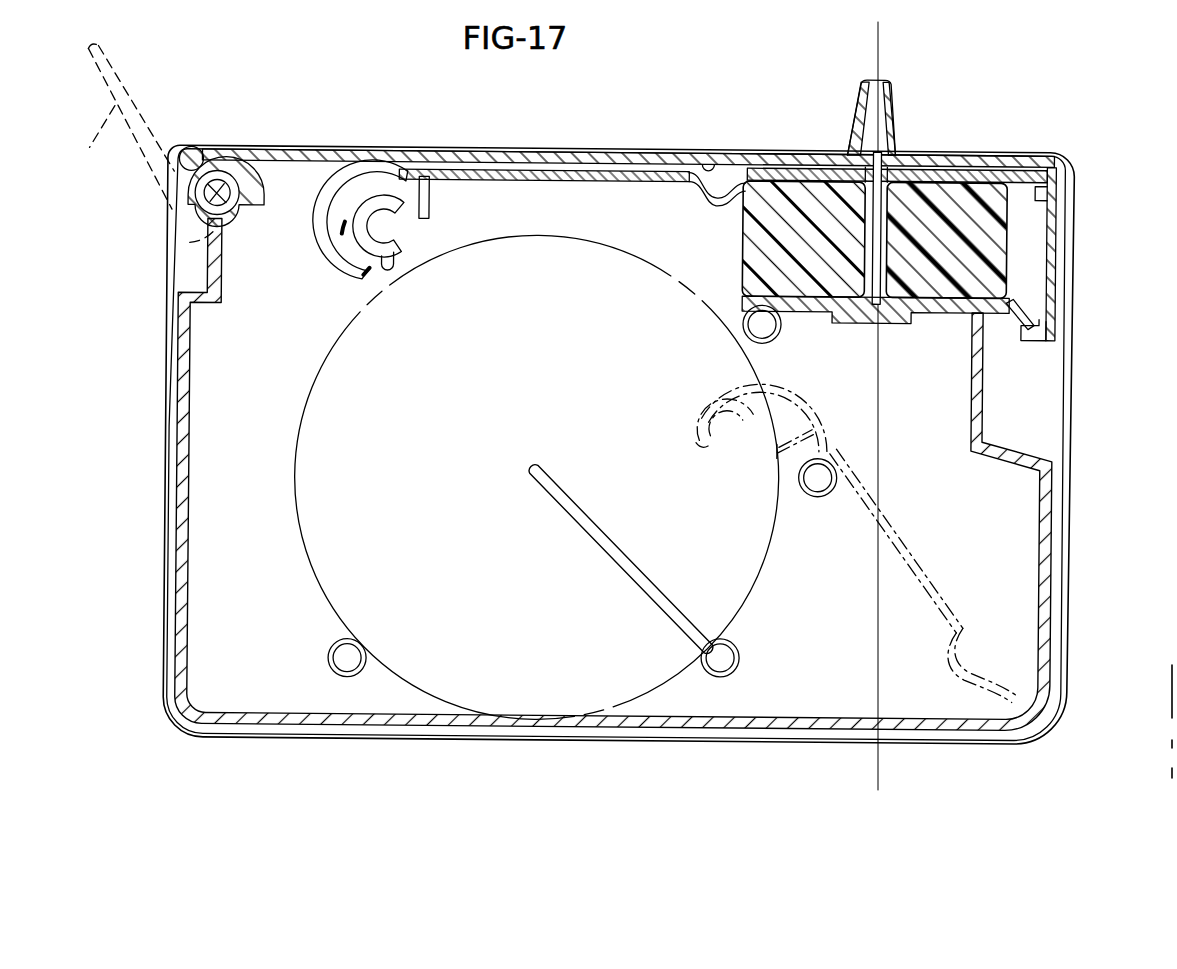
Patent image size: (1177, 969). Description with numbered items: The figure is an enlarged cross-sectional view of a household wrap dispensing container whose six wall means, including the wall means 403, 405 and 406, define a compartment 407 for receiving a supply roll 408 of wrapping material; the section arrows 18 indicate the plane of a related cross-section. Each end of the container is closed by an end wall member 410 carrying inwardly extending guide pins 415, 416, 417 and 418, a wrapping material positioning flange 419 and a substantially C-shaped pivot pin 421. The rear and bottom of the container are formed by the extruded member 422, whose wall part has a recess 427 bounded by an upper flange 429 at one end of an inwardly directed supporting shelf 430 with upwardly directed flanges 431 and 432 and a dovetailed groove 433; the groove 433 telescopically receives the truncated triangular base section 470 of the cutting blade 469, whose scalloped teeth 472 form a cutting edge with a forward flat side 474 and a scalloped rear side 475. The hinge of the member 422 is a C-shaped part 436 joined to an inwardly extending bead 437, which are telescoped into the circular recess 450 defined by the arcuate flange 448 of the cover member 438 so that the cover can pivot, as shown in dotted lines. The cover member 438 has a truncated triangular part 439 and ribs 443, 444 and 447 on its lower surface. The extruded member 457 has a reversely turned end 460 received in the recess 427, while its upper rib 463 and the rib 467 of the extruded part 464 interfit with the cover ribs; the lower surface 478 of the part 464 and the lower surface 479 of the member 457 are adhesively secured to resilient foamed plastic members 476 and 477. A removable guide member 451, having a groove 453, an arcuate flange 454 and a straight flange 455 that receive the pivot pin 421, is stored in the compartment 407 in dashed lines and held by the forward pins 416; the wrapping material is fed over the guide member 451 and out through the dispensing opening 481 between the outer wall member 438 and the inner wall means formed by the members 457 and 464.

The section line 18- 18 is at (866, 32).
The wall means 403 is at (166, 456).
The wall means 405 is at (1066, 593).
The wall means 406 is at (488, 737).
The compartment 407 is at (1011, 565).
The supply roll 408 is at (300, 581).
The end wall member 410 is at (275, 697).
The guide pin 415 is at (757, 331).
The guide pin 416 is at (806, 487).
The guide pin 417 is at (740, 660).
The guide pin 418 is at (350, 676).
The wrapping material positioning flange 419 is at (600, 533).
The C-shaped pivot pin 421 is at (385, 270).
The extruded member 422 is at (1053, 492).
The recess 427 is at (1031, 393).
The upper flange 429 is at (1030, 330).
The supporting shelf 430 is at (960, 320).
The upwardly directed flange 431 is at (742, 302).
The upwardly directed flange 432 is at (1054, 300).
The dovetailed groove 433 is at (870, 320).
The C-shaped part 436 is at (206, 205).
The bead 437 is at (230, 211).
The cover member 438 is at (480, 117).
The truncated triangular part 439 is at (888, 92).
The rib 443 is at (862, 150).
The rib 444 is at (893, 166).
The rib 447 is at (1074, 192).
The arcuate flange 448 is at (187, 155).
The recess 450 is at (226, 182).
The guide member 451 is at (566, 170).
The groove 453 is at (708, 194).
The arcuate flange 454 is at (345, 238).
The straight flange 455 is at (430, 200).
The extruded member 457 is at (1058, 230).
The reversely turned end 460 is at (1058, 338).
The rib 463 is at (1042, 186).
The extruded part 464 is at (755, 172).
The rib 467 is at (838, 165).
The cutting blade 469 is at (866, 256).
The base section 470 is at (882, 330).
The scalloped teeth 472 is at (881, 166).
The forward flat side 474 is at (900, 306).
The scalloped rear side 475 is at (855, 306).
The resilient member 476 is at (746, 241).
The resilient member 477 is at (992, 262).
The lower surface 478 is at (792, 178).
The lower surface 479 is at (975, 186).
The dispensing opening 481 is at (1068, 172).